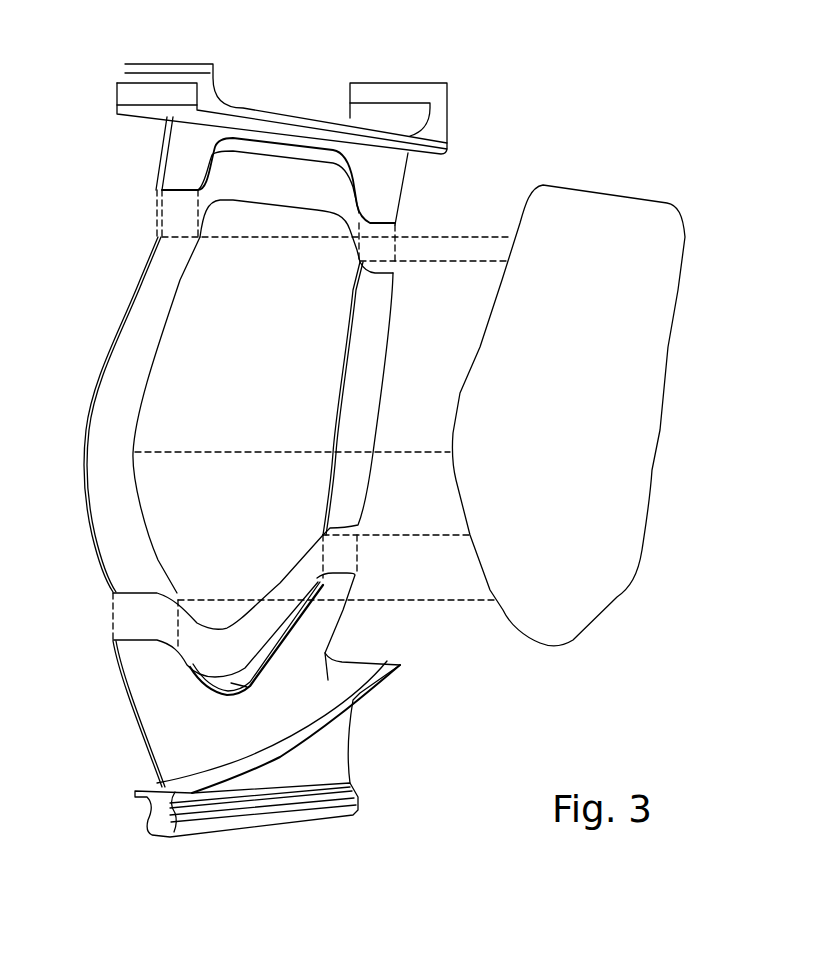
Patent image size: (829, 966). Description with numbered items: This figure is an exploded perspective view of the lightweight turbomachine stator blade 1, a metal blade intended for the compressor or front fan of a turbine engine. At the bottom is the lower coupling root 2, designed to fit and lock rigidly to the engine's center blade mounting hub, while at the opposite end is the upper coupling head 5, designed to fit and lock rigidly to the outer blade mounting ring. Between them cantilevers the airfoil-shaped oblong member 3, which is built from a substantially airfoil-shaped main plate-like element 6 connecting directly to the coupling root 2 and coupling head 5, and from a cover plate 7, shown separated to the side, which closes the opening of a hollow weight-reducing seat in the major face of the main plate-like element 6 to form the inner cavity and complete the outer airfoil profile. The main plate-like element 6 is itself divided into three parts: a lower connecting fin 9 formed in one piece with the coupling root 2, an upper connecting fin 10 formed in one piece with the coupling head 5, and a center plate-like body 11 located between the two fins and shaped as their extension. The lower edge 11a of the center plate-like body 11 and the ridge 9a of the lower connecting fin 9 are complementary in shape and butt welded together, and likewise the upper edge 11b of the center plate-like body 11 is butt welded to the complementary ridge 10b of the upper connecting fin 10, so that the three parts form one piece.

The turbomachine stator blade 1 is at (540, 152).
The lower coupling root 2 is at (303, 817).
The airfoil-shaped oblong member 3 is at (89, 311).
The upper coupling head 5 is at (260, 112).
The main plate-like element 6 is at (80, 420).
The cover plate 7 is at (592, 425).
The lower connecting fin 9 is at (335, 631).
The ridge of lower connecting fin 9a is at (207, 660).
The upper connecting fin 10 is at (157, 148).
The ridge of upper connecting fin 10b is at (252, 165).
The center plate-like body 11 is at (365, 393).
The lower edge of center plate-like body 11a is at (255, 628).
The upper edge of center plate-like body 11b is at (311, 200).